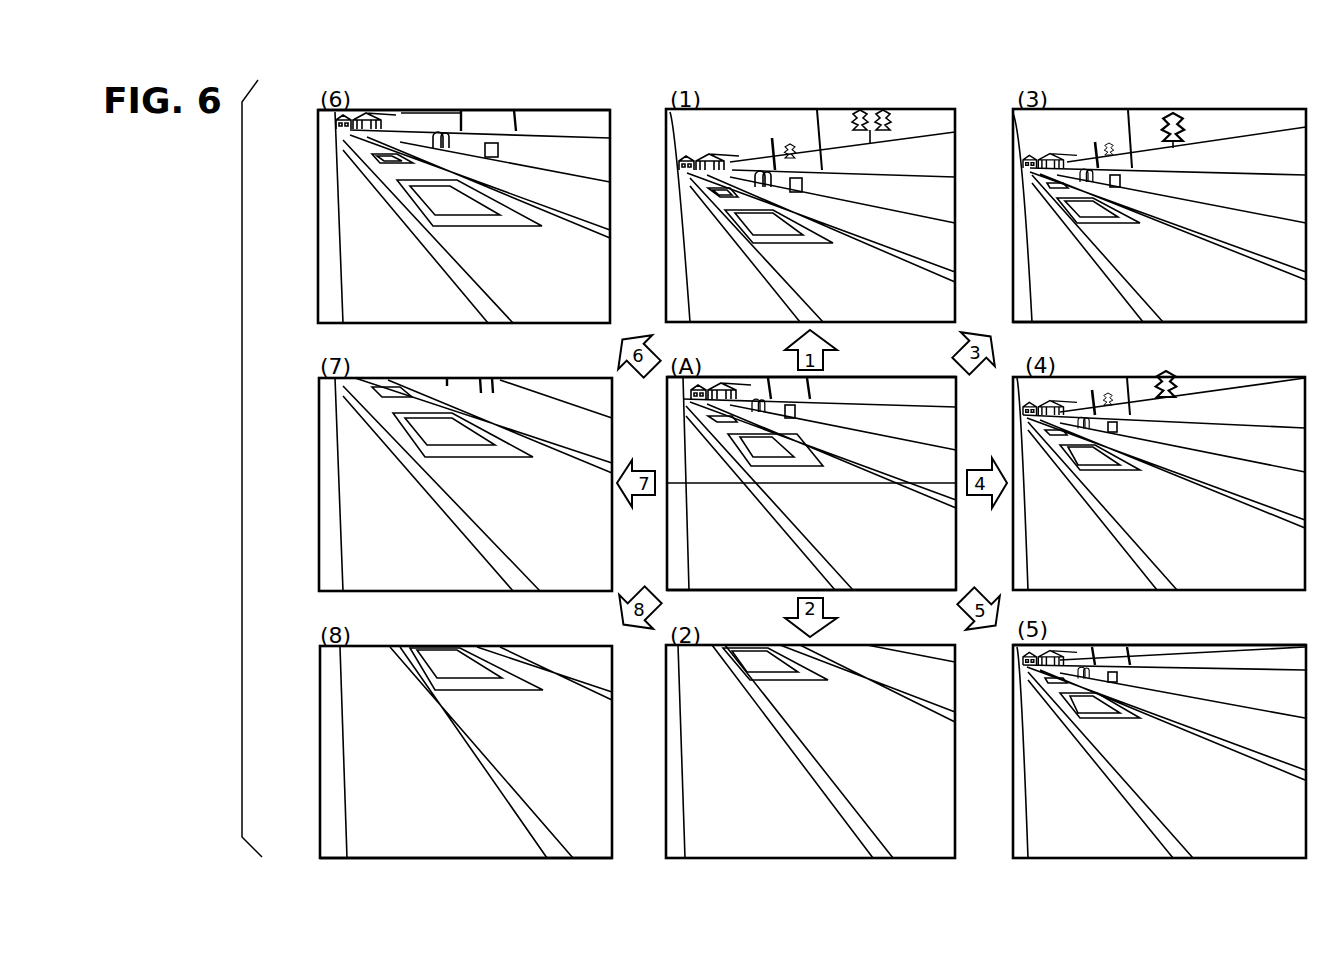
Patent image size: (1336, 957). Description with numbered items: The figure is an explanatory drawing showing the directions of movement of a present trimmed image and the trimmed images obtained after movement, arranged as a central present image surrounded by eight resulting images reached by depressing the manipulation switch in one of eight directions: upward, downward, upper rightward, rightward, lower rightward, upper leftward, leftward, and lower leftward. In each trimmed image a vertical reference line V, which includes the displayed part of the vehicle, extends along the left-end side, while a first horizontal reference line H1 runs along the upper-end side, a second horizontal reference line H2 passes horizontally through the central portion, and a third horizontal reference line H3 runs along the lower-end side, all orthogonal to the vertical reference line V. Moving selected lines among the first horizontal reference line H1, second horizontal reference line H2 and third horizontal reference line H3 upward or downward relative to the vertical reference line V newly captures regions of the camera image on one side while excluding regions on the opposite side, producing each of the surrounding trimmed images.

The vertical reference line V is at (318, 168).
The first horizontal reference line H1 is at (505, 110).
The second horizontal reference line H2 is at (872, 483).
The third horizontal reference line H3 is at (1220, 322).